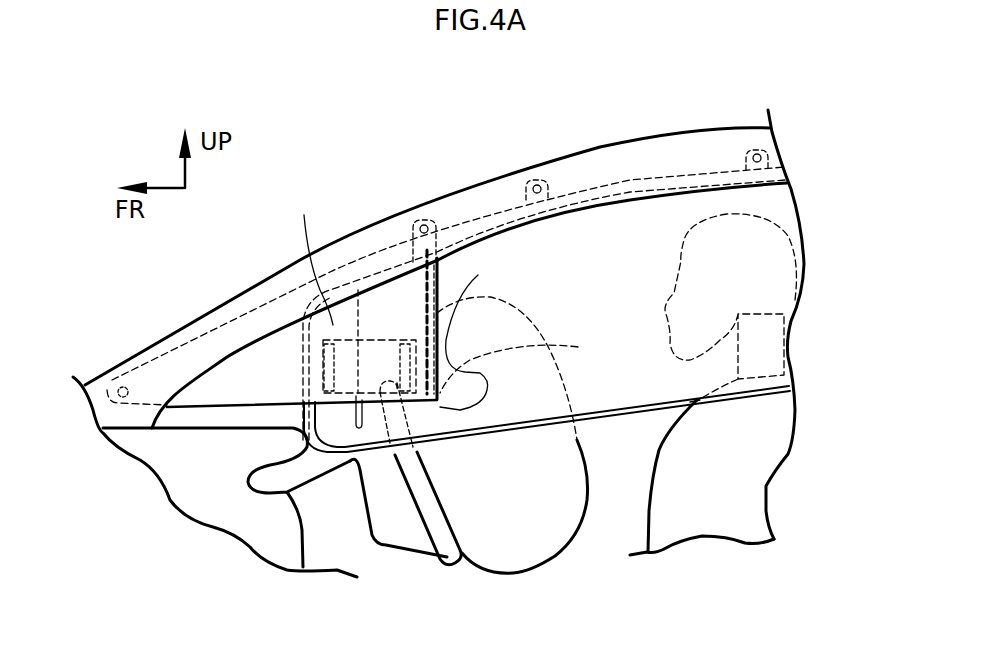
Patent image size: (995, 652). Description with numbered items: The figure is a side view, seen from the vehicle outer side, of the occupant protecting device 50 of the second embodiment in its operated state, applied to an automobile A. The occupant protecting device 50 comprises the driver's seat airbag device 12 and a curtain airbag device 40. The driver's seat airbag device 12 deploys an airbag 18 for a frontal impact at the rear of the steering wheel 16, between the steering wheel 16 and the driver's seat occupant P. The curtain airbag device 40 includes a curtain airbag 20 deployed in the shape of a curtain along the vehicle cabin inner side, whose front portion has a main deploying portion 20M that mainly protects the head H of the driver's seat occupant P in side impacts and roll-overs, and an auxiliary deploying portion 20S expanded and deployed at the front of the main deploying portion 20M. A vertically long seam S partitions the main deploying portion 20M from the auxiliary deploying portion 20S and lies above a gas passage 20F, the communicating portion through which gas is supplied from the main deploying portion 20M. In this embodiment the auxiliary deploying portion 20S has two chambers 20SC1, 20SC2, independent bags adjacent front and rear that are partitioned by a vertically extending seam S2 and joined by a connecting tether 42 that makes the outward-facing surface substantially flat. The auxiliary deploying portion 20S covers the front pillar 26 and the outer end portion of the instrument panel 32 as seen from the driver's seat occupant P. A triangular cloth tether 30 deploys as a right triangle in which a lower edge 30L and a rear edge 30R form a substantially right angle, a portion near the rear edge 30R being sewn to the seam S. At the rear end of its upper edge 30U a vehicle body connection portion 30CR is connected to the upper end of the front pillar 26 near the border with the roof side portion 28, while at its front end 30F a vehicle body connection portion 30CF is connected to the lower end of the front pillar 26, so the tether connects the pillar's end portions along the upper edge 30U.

The driver's seat airbag device 12 is at (557, 582).
The steering wheel 16 is at (452, 565).
The airbag for a frontal impact 18 is at (517, 563).
The curtain airbag 20 is at (605, 240).
The gas passage 20F is at (375, 433).
The main deploying portion 20M is at (505, 412).
The auxiliary deploying portion 20S is at (493, 132).
The chamber 20SC1 is at (304, 215).
The chamber 20SC2 is at (368, 350).
The front pillar 26 is at (202, 322).
The roof side portion 28 is at (663, 147).
The triangular cloth tether 30 is at (202, 393).
The vehicle body connection portion 30CF is at (123, 386).
The vehicle body connection portion 30CR is at (427, 220).
The front end 30F is at (107, 390).
The lower edge 30L is at (223, 408).
The rear edge 30R is at (453, 313).
The upper edge 30U is at (226, 313).
The instrument panel 32 is at (210, 508).
The curtain airbag device 40 is at (617, 437).
The connecting tether 42 is at (374, 360).
The occupant protecting device 50 is at (597, 520).
The automobile A is at (712, 122).
The head H is at (750, 235).
The driver's seat occupant P is at (653, 445).
The seam S is at (478, 275).
The seam S2 is at (525, 364).